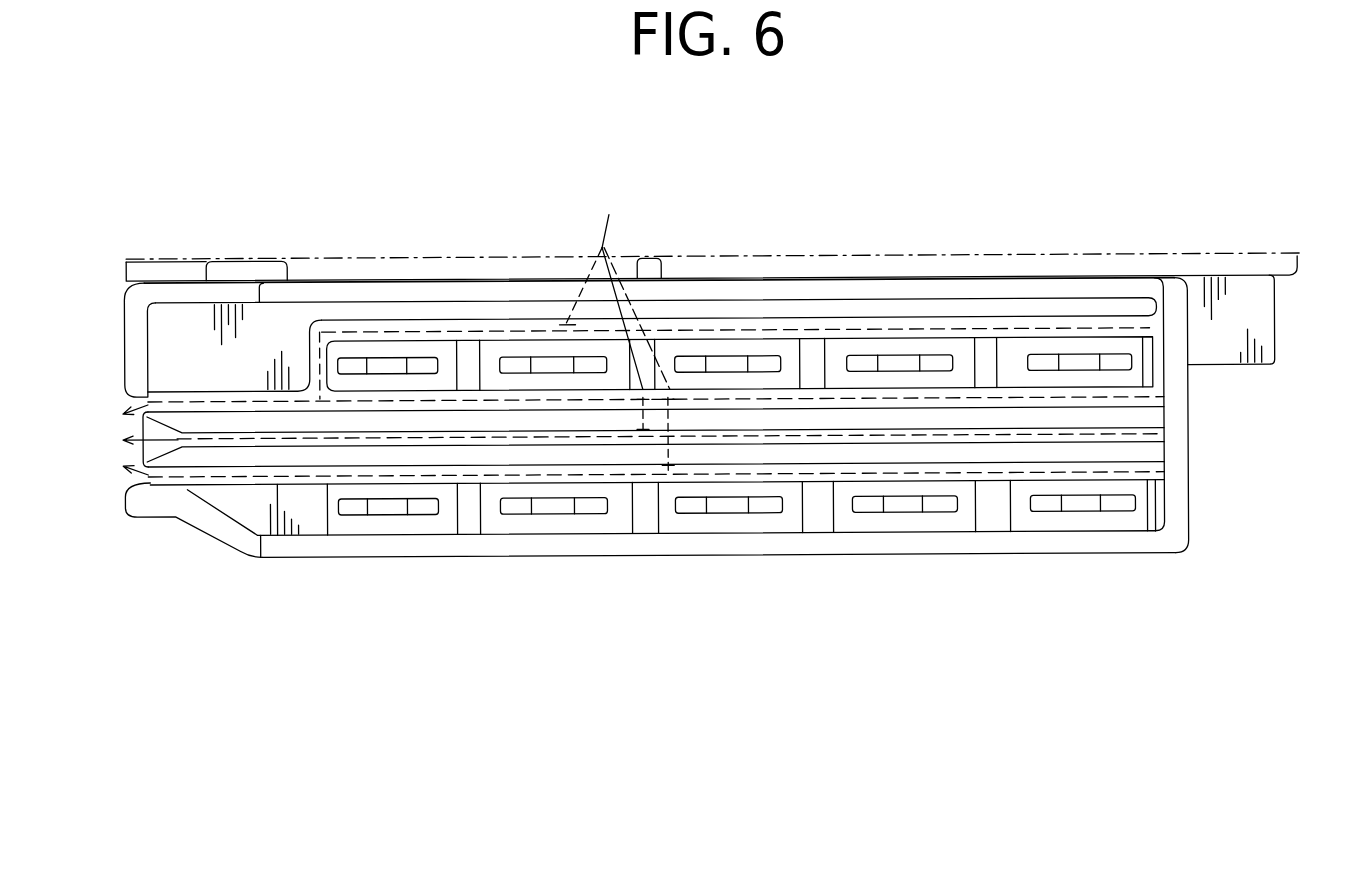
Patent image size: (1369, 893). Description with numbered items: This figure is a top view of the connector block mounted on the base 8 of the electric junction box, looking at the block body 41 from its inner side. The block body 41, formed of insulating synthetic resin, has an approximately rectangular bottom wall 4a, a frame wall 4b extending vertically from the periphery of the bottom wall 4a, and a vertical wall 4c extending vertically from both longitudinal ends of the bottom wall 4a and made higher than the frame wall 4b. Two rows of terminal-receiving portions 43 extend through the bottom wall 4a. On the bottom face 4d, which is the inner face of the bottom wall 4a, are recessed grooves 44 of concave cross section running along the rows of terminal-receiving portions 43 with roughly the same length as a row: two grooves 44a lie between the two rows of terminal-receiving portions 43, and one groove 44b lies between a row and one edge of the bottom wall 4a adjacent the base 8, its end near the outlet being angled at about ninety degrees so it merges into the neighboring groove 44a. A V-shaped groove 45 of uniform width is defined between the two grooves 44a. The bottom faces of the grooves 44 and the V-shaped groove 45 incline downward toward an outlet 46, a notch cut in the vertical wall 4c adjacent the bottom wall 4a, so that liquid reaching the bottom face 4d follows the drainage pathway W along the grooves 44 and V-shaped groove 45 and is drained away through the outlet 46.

The base 8 is at (152, 262).
The groove 44 is at (657, 408).
The groove 44a is at (398, 487).
The groove 44b is at (390, 322).
The drainage pathway W is at (617, 328).
The frame wall 4b is at (822, 288).
The bottom wall 4a is at (1031, 306).
The bottom face 4d is at (1115, 305).
The vertical wall 4c is at (133, 350).
The outlet 46 is at (127, 429).
The block body 41 is at (1191, 424).
The V-shaped groove 45 is at (540, 440).
The terminal-receiving portion 43 is at (900, 517).